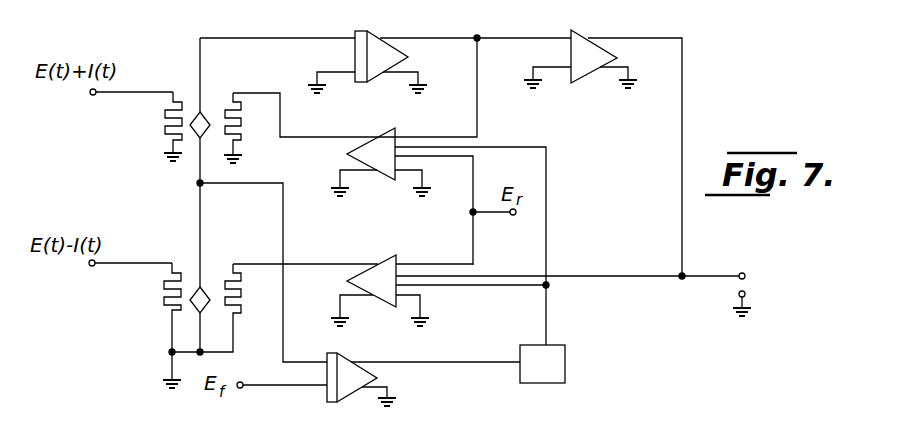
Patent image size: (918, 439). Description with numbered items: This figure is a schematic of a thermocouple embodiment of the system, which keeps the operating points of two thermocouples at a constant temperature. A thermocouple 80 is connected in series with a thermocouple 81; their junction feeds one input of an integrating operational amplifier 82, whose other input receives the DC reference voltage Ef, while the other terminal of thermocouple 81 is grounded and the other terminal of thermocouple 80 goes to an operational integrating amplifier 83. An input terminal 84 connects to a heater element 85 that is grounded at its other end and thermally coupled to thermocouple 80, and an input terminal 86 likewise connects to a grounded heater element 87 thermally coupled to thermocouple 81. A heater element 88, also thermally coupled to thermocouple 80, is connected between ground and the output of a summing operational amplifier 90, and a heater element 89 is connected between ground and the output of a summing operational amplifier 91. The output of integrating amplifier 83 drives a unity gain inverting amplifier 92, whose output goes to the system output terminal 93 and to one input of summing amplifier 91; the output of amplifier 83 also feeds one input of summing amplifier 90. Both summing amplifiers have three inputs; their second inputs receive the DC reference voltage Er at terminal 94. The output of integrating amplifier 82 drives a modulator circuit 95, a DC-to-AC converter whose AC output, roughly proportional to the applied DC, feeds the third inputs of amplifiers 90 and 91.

The thermocouple 80 is at (193, 112).
The thermocouple 81 is at (193, 288).
The integrating operational amplifier 82 is at (340, 398).
The operational integrating amplifier 83 is at (372, 43).
The input terminal 84 is at (91, 96).
The heater element 85 is at (165, 124).
The input terminal 86 is at (91, 267).
The heater element 87 is at (166, 300).
The heater element 88 is at (242, 137).
The heater element 89 is at (241, 290).
The summing operational amplifier 90 is at (377, 178).
The summing operational amplifier 91 is at (377, 300).
The unity gain inverting amplifier 92 is at (587, 77).
The system output terminal 93 is at (741, 273).
The terminal 94 is at (514, 216).
The modulator circuit 95 is at (566, 351).